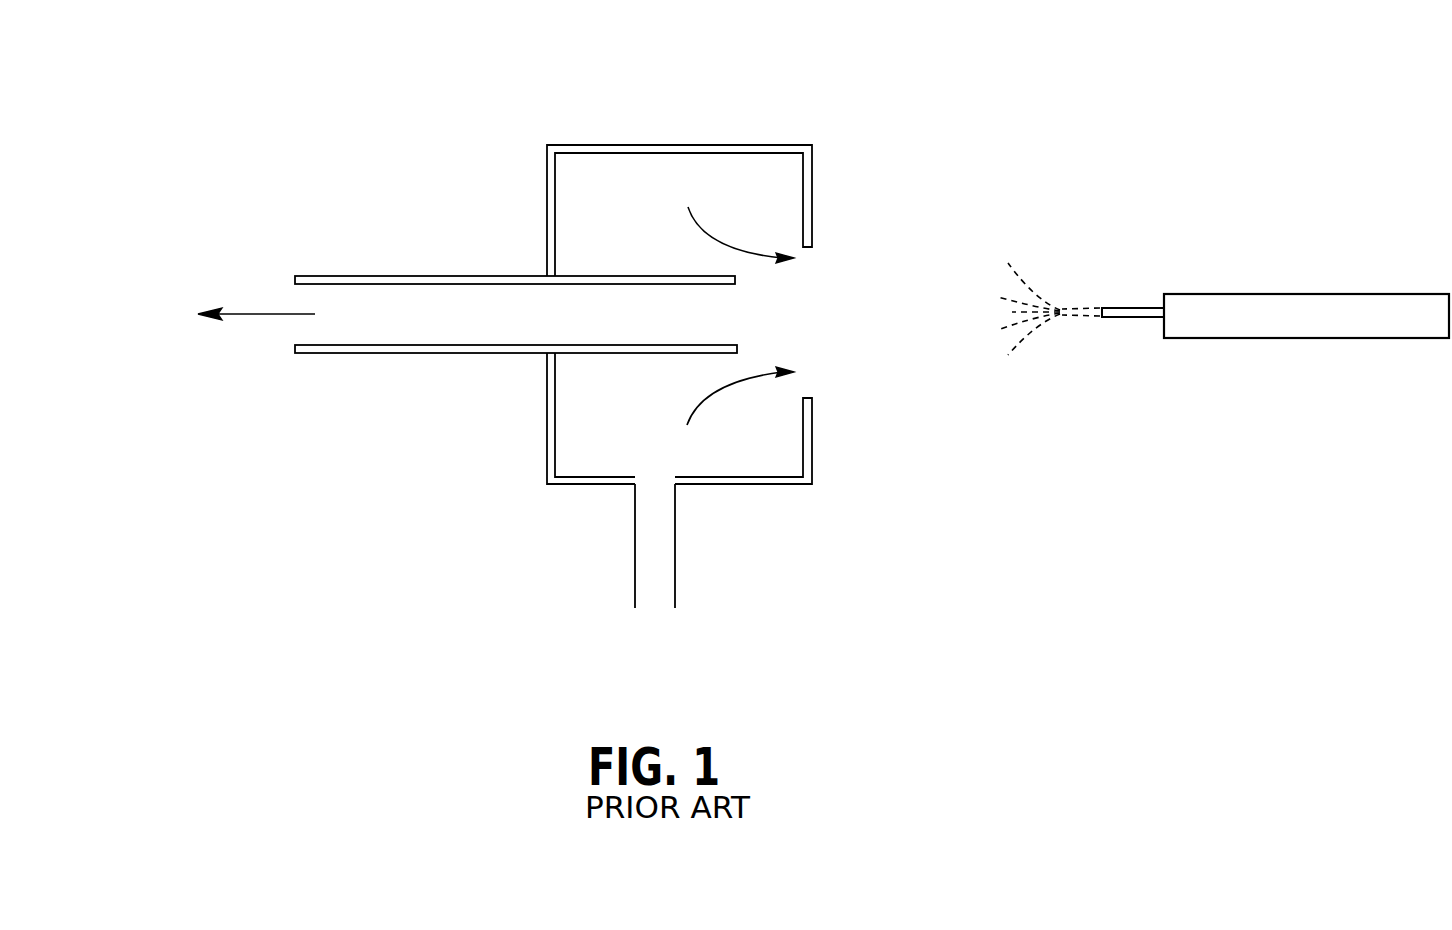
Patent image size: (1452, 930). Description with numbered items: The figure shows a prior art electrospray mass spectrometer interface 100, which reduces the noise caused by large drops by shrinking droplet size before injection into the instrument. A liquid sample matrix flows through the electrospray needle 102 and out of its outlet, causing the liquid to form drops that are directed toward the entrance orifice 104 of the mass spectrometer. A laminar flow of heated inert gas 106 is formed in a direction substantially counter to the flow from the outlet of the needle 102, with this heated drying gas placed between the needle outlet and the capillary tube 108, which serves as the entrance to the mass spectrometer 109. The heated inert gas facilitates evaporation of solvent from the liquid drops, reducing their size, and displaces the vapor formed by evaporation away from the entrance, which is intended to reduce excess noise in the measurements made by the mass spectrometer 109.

The prior art electrospray mass spectrometer interface 100 is at (708, 50).
The electrospray needle 102 is at (1135, 307).
The entrance orifice 104 is at (785, 145).
The laminar flow of heated inert gas 106 is at (664, 628).
The capillary tube 108 is at (365, 275).
The mass spectrometer 109 is at (228, 309).